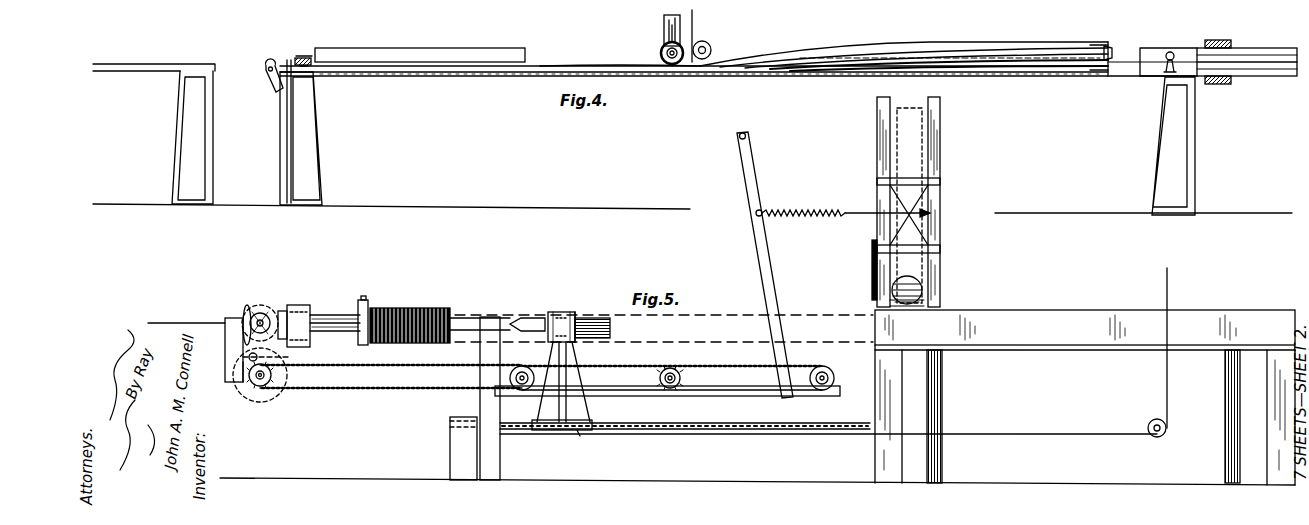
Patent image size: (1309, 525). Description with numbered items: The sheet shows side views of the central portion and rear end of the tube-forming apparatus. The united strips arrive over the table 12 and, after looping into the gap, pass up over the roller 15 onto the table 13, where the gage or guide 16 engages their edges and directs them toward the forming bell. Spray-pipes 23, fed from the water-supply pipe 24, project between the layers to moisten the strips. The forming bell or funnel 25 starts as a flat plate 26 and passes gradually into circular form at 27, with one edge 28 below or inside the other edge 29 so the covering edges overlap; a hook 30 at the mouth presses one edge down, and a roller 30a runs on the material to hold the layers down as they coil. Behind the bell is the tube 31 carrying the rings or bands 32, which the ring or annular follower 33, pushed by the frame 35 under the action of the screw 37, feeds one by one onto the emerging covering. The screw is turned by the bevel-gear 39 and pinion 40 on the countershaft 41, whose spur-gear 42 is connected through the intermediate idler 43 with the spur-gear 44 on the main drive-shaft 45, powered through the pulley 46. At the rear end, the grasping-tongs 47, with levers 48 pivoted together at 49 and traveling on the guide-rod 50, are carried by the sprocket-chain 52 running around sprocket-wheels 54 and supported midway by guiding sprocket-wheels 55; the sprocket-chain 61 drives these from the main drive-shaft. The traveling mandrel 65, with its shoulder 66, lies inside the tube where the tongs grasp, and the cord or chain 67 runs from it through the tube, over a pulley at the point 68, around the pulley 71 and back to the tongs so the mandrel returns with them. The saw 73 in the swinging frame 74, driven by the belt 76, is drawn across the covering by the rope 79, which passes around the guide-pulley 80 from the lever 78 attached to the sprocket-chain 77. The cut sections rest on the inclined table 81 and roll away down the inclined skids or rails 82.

In FIG. 4, the table 12 is at (160, 70).
In FIG. 4, the table 13 is at (417, 75).
In FIG. 4, the roller 15 is at (273, 68).
In FIG. 4, the gage or guide 16 is at (420, 43).
In FIG. 4, the spray-pipes 23 is at (304, 57).
In FIG. 4, the water-supply pipe 24 is at (296, 161).
In FIG. 4, the forming bell or funnel 25 is at (944, 50).
In FIG. 4, the flat plate 26 is at (548, 72).
In FIG. 4, the circular portion of bell 27 is at (1100, 77).
In FIG. 4, the edge of bell 28 is at (1110, 50).
In FIG. 4, the edge of bell 29 is at (1082, 46).
In FIG. 4, the hook 30 is at (1169, 52).
In FIG. 4, the roller 30a is at (661, 53).
In FIG. 4, the tube 31 is at (1264, 50).
In FIG. 5, the tube 31 is at (330, 313).
In FIG. 5, the rings or bands 32 is at (428, 307).
In FIG. 5, the ring or annular follower 33 is at (362, 338).
In FIG. 5, the frame 35 is at (365, 299).
In FIG. 5, the screw 37 is at (466, 333).
In FIG. 5, the bevel-gear 39 is at (263, 313).
In FIG. 5, the pinion 40 is at (272, 312).
In FIG. 5, the countershaft 41 is at (228, 337).
In FIG. 5, the spur-gear 42 is at (242, 308).
In FIG. 5, the intermediate idler 43 is at (270, 357).
In FIG. 5, the spur-gear 44 is at (262, 390).
In FIG. 5, the main drive-shaft 45 is at (250, 385).
In FIG. 5, the pulley 46 is at (278, 395).
In FIG. 5, the grasping-tongs 47 is at (561, 316).
In FIG. 5, the levers 48 is at (572, 352).
In FIG. 5, the pivot 49 is at (567, 431).
In FIG. 5, the guide-rod 50 is at (641, 423).
In FIG. 5, the sprocket-chain 52 is at (710, 367).
In FIG. 5, the sprocket-wheels 54 is at (525, 366).
In FIG. 5, the guiding sprocket-wheels 55 is at (668, 367).
In FIG. 5, the sprocket-chain 61 is at (405, 392).
In FIG. 5, the traveling mandrel 65 is at (596, 318).
In FIG. 5, the shoulder 66 is at (578, 312).
In FIG. 5, the cord or chain 67 is at (518, 316).
In FIG. 4, the pulley point 68 is at (711, 47).
In FIG. 5, the pulley 71 is at (1144, 424).
In FIG. 5, the saw 73 is at (872, 262).
In FIG. 5, the swinging frame 74 is at (920, 202).
In FIG. 5, the belt 76 is at (920, 268).
In FIG. 5, the sprocket-chain 77 is at (746, 393).
In FIG. 5, the lever 78 is at (773, 280).
In FIG. 5, the rope 79 is at (845, 216).
In FIG. 5, the guide-pulley 80 is at (808, 211).
In FIG. 5, the inclined table 81 is at (1044, 346).
In FIG. 5, the inclined skids or rails 82 is at (943, 395).